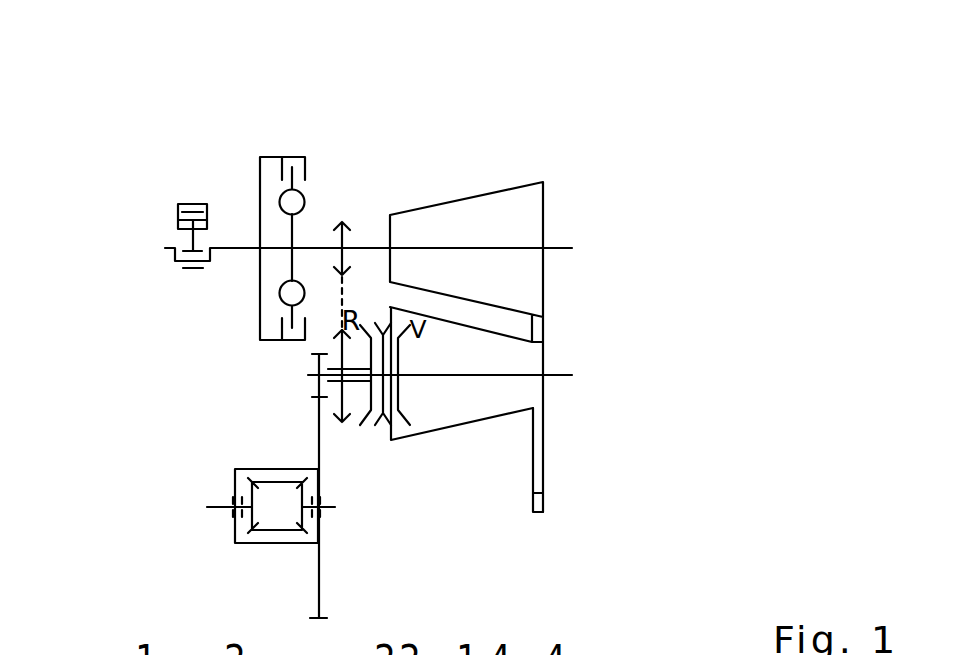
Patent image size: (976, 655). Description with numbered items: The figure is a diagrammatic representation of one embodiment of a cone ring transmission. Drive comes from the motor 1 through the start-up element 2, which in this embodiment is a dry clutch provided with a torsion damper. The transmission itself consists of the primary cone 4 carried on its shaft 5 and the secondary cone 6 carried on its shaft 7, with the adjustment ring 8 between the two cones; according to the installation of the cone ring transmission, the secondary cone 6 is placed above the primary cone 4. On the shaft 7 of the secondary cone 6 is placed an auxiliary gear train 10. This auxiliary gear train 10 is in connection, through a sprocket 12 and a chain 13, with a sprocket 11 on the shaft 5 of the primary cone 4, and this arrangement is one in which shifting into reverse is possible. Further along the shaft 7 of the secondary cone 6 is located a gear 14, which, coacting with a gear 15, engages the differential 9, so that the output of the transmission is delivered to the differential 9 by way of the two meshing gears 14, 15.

The motor 1 is at (187, 204).
The start-up element 2 is at (273, 157).
The primary cone 4 is at (497, 192).
The shaft 5 is at (558, 250).
The secondary cone 6 is at (427, 433).
The shaft 7 is at (565, 378).
The adjustment ring 8 is at (542, 498).
The differential 9 is at (262, 547).
The auxiliary gear train 10 is at (380, 437).
The sprocket for chain 11 is at (347, 222).
The sprocket for chain 12 is at (342, 398).
The chain 13 is at (345, 302).
The gear 14 is at (319, 393).
The gear 15 is at (319, 427).